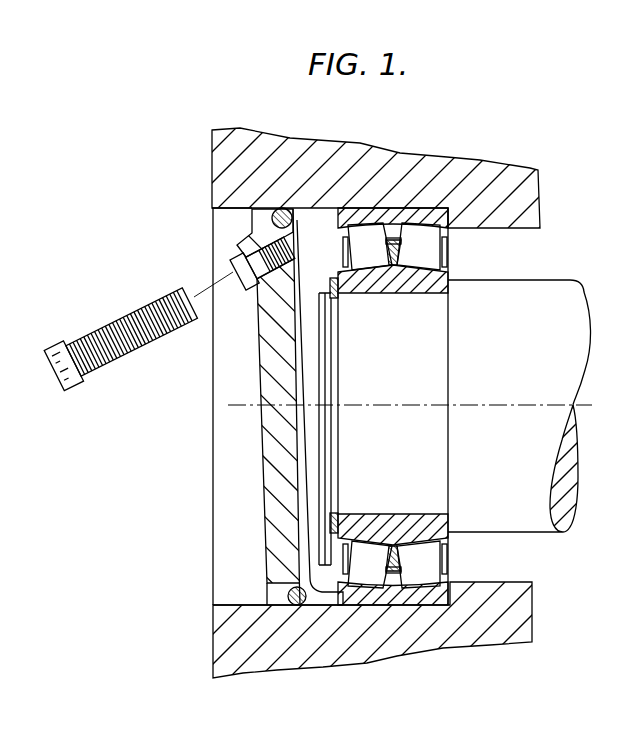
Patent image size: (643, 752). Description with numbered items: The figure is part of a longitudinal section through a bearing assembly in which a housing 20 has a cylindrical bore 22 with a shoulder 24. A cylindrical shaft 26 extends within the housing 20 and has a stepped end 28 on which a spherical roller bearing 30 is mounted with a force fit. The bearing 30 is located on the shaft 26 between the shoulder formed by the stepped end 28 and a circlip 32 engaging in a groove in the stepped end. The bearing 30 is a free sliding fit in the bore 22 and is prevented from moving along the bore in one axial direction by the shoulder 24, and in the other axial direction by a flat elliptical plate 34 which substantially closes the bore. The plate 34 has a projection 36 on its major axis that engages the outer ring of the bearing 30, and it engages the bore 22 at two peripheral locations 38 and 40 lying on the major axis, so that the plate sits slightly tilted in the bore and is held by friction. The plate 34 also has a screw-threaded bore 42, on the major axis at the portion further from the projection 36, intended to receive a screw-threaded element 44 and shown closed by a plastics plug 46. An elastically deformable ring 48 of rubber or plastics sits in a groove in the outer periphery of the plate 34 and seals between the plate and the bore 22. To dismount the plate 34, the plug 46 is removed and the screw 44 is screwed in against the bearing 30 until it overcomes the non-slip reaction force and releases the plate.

The housing 20 is at (418, 162).
The cylindrical bore 22 is at (227, 210).
The shoulder 24 is at (443, 600).
The cylindrical shaft 26 is at (568, 290).
The stepped end 28 is at (432, 352).
The spherical roller bearing 30 is at (464, 190).
The circlip 32 is at (327, 522).
The flat elliptical plate 34 is at (270, 419).
The projection 36 is at (327, 598).
The location 38 is at (276, 210).
The location 40 is at (268, 606).
The screw-threaded bore 42 is at (252, 236).
The screw-threaded element 44 is at (117, 346).
The plastics plug 46 is at (235, 264).
The elastically deformable ring 48 is at (310, 583).